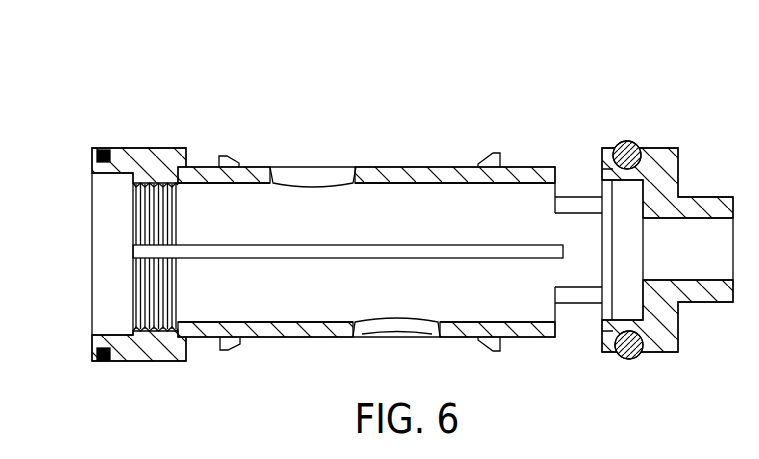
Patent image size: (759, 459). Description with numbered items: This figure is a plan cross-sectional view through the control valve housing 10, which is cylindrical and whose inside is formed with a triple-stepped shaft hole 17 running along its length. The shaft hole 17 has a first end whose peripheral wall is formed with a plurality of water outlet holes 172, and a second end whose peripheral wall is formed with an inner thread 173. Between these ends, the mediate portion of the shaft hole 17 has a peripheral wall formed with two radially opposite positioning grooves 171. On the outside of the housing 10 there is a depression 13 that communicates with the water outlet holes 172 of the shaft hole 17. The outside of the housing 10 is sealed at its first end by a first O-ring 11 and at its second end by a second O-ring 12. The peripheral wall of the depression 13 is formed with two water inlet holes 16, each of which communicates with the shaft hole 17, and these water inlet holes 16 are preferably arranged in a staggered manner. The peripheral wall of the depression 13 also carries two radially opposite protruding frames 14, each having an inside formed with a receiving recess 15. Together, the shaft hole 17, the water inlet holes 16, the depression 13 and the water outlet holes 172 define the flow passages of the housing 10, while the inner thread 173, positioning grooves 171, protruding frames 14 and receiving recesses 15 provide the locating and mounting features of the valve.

The housing 10 is at (164, 138).
The first O-ring 11 is at (627, 141).
The second O-ring 12 is at (103, 150).
The depression 13 is at (525, 167).
The protruding frame 14 is at (230, 157).
The receiving recess 15 is at (368, 167).
The water inlet hole 16 is at (295, 178).
The shaft hole 17 is at (465, 217).
The positioning groove 171 is at (437, 252).
The water outlet hole 172 is at (568, 187).
The inner thread 173 is at (148, 323).